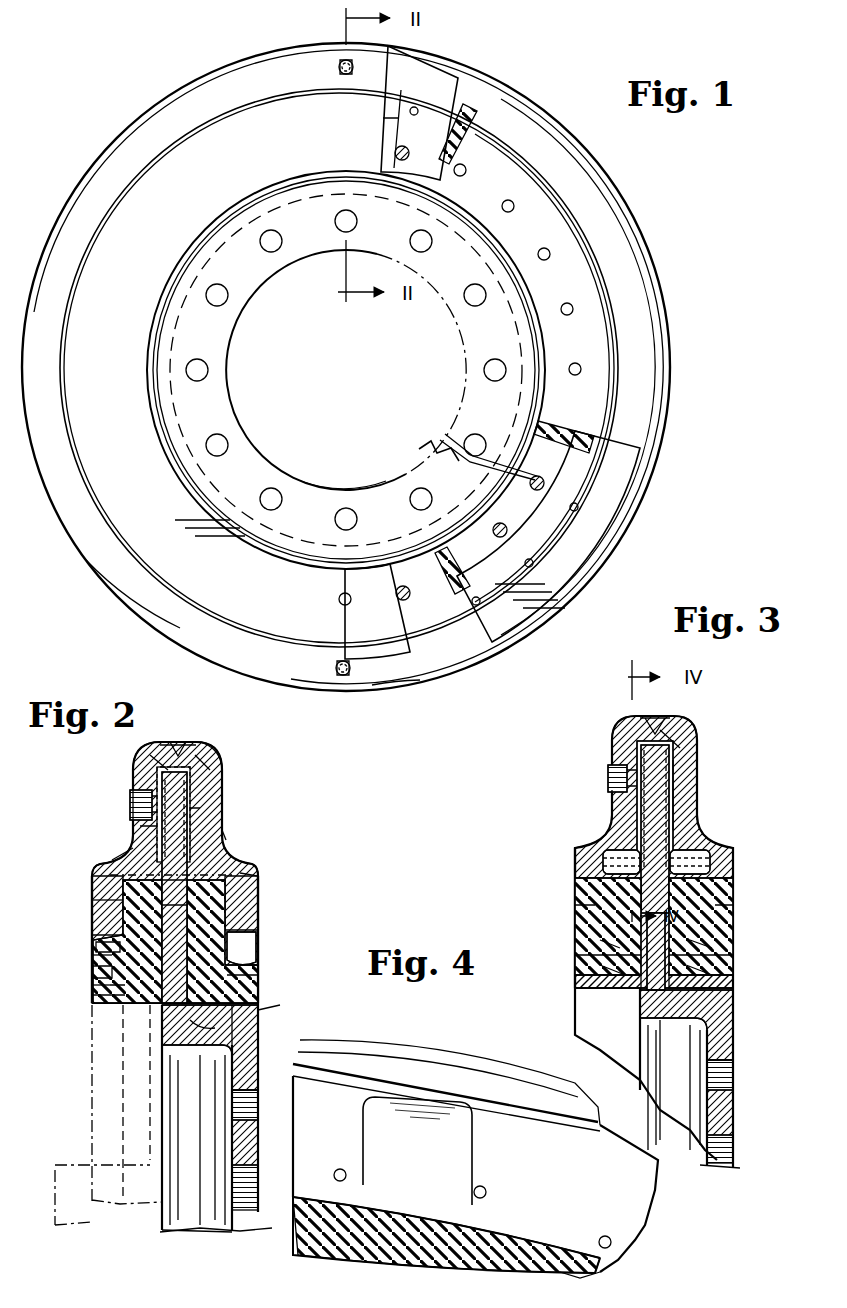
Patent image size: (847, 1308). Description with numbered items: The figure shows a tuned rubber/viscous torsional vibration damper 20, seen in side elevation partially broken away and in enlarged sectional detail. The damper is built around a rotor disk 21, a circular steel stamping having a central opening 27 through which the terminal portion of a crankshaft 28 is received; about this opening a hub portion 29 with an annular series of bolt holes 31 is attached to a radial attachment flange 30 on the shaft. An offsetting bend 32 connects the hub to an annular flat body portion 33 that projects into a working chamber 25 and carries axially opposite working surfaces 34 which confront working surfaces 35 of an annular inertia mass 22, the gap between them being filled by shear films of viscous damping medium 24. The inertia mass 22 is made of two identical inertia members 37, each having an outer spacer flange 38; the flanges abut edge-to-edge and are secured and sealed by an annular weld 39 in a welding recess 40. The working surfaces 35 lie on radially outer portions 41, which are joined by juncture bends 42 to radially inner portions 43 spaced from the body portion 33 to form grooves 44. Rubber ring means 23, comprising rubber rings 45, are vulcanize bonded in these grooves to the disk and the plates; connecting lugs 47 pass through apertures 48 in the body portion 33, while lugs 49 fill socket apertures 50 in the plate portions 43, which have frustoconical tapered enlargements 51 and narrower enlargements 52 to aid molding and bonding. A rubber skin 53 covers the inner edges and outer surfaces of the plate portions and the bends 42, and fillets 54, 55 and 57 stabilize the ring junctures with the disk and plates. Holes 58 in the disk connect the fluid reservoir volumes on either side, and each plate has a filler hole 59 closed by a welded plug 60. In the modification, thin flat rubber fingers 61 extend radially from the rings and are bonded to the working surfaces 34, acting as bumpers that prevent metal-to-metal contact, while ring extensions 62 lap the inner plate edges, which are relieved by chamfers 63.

In FIG. 1, the tuned rubber/viscous torsional vibration damper 20 is at (165, 86).
In FIG. 2, the tuned rubber/viscous torsional vibration damper 20 is at (112, 842).
In FIG. 3, the tuned rubber/viscous torsional vibration damper 20 is at (604, 820).
In FIG. 4, the tuned rubber/viscous torsional vibration damper 20 is at (521, 1058).
In FIG. 1, the rotor disk 21 is at (420, 458).
In FIG. 2, the rotor disk 21 is at (166, 1040).
In FIG. 3, the rotor disk 21 is at (728, 1020).
In FIG. 4, the rotor disk 21 is at (636, 1236).
In FIG. 1, the annular inertia mass 22 is at (672, 332).
In FIG. 2, the annular inertia mass 22 is at (232, 771).
In FIG. 3, the annular inertia mass 22 is at (702, 730).
In FIG. 1, the rubber ring means 23 is at (415, 545).
In FIG. 2, the rubber ring means 23 is at (148, 1006).
In FIG. 3, the rubber ring means 23 is at (612, 992).
In FIG. 2, the viscous damping medium 24 is at (230, 842).
In FIG. 2, the working chamber 25 is at (116, 862).
In FIG. 3, the working chamber 25 is at (640, 746).
In FIG. 1, the opening 27 is at (368, 492).
In FIG. 2, the opening 27 is at (226, 1222).
In FIG. 3, the opening 27 is at (734, 1152).
In FIG. 2, the crankshaft 28 is at (262, 1168).
In FIG. 1, the hub portion 29 is at (248, 466).
In FIG. 2, the hub portion 29 is at (258, 1050).
In FIG. 2, the radial attachment flange 30 is at (150, 1138).
In FIG. 1, the bolt holes 31 is at (340, 516).
In FIG. 2, the bolt holes 31 is at (248, 1116).
In FIG. 3, the bolt holes 31 is at (726, 1088).
In FIG. 1, the offsetting bend 32 is at (482, 500).
In FIG. 2, the offsetting bend 32 is at (262, 1012).
In FIG. 3, the offsetting bend 32 is at (676, 1018).
In FIG. 1, the annular flat body portion 33 is at (458, 102).
In FIG. 2, the annular flat body portion 33 is at (150, 770).
In FIG. 3, the annular flat body portion 33 is at (697, 784).
In FIG. 4, the annular flat body portion 33 is at (640, 1190).
In FIG. 2, the working surfaces 34 is at (140, 826).
In FIG. 3, the working surfaces 34 is at (673, 812).
In FIG. 1, the working surfaces 35 is at (636, 452).
In FIG. 2, the working surfaces 35 is at (224, 822).
In FIG. 3, the working surfaces 35 is at (678, 760).
In FIG. 2, the inertia members 37 is at (94, 1000).
In FIG. 3, the inertia members 37 is at (580, 872).
In FIG. 1, the spacer flange 38 is at (678, 368).
In FIG. 2, the spacer flange 38 is at (168, 760).
In FIG. 3, the spacer flange 38 is at (680, 730).
In FIG. 4, the spacer flange 38 is at (576, 1100).
In FIG. 2, the annular weld 39 is at (180, 746).
In FIG. 3, the annular weld 39 is at (656, 716).
In FIG. 2, the welding recess 40 is at (215, 748).
In FIG. 4, the welding recess 40 is at (540, 1080).
In FIG. 1, the radially outer portions 41 is at (182, 621).
In FIG. 2, the radially outer portions 41 is at (135, 785).
In FIG. 1, the juncture bends 42 is at (400, 640).
In FIG. 2, the juncture bends 42 is at (252, 860).
In FIG. 1, the radially inner portions 43 is at (367, 625).
In FIG. 2, the radially inner portions 43 is at (93, 985).
In FIG. 3, the radially inner portions 43 is at (598, 944).
In FIG. 4, the radially inner portions 43 is at (600, 1122).
In FIG. 2, the grooves 44 is at (92, 890).
In FIG. 1, the rubber rings 45 is at (440, 142).
In FIG. 2, the rubber rings 45 is at (110, 1008).
In FIG. 3, the rubber rings 45 is at (580, 952).
In FIG. 4, the rubber rings 45 is at (426, 1252).
In FIG. 2, the connecting lugs 47 is at (176, 988).
In FIG. 3, the connecting lugs 47 is at (670, 951).
In FIG. 1, the apertures 48 is at (508, 531).
In FIG. 2, the apertures 48 is at (176, 887).
In FIG. 3, the apertures 48 is at (656, 924).
In FIG. 1, the lugs 49 is at (410, 594).
In FIG. 2, the lugs 49 is at (98, 935).
In FIG. 3, the lugs 49 is at (580, 930).
In FIG. 1, the socket apertures 50 is at (570, 316).
In FIG. 2, the socket apertures 50 is at (96, 944).
In FIG. 3, the socket apertures 50 is at (578, 906).
In FIG. 2, the frustoconical tapered enlargements 51 is at (93, 970).
In FIG. 2, the frustoconical enlargements 52 is at (93, 955).
In FIG. 1, the rubber skin 53 is at (238, 612).
In FIG. 2, the rubber skin 53 is at (96, 902).
In FIG. 2, the fillets 54 is at (205, 1018).
In FIG. 2, the fillets 55 is at (176, 892).
In FIG. 2, the fillets 57 is at (125, 878).
In FIG. 1, the holes 58 is at (533, 562).
In FIG. 2, the holes 58 is at (178, 820).
In FIG. 3, the holes 58 is at (655, 810).
In FIG. 4, the holes 58 is at (337, 1168).
In FIG. 1, the filler hole 59 is at (354, 67).
In FIG. 2, the filler hole 59 is at (175, 814).
In FIG. 1, the plugs 60 is at (338, 67).
In FIG. 2, the plugs 60 is at (130, 794).
In FIG. 3, the plugs 60 is at (608, 778).
In FIG. 3, the rubber fingers 61 is at (712, 838).
In FIG. 4, the rubber fingers 61 is at (470, 1135).
In FIG. 3, the extensions 62 is at (578, 982).
In FIG. 3, the chamfers 63 is at (636, 962).